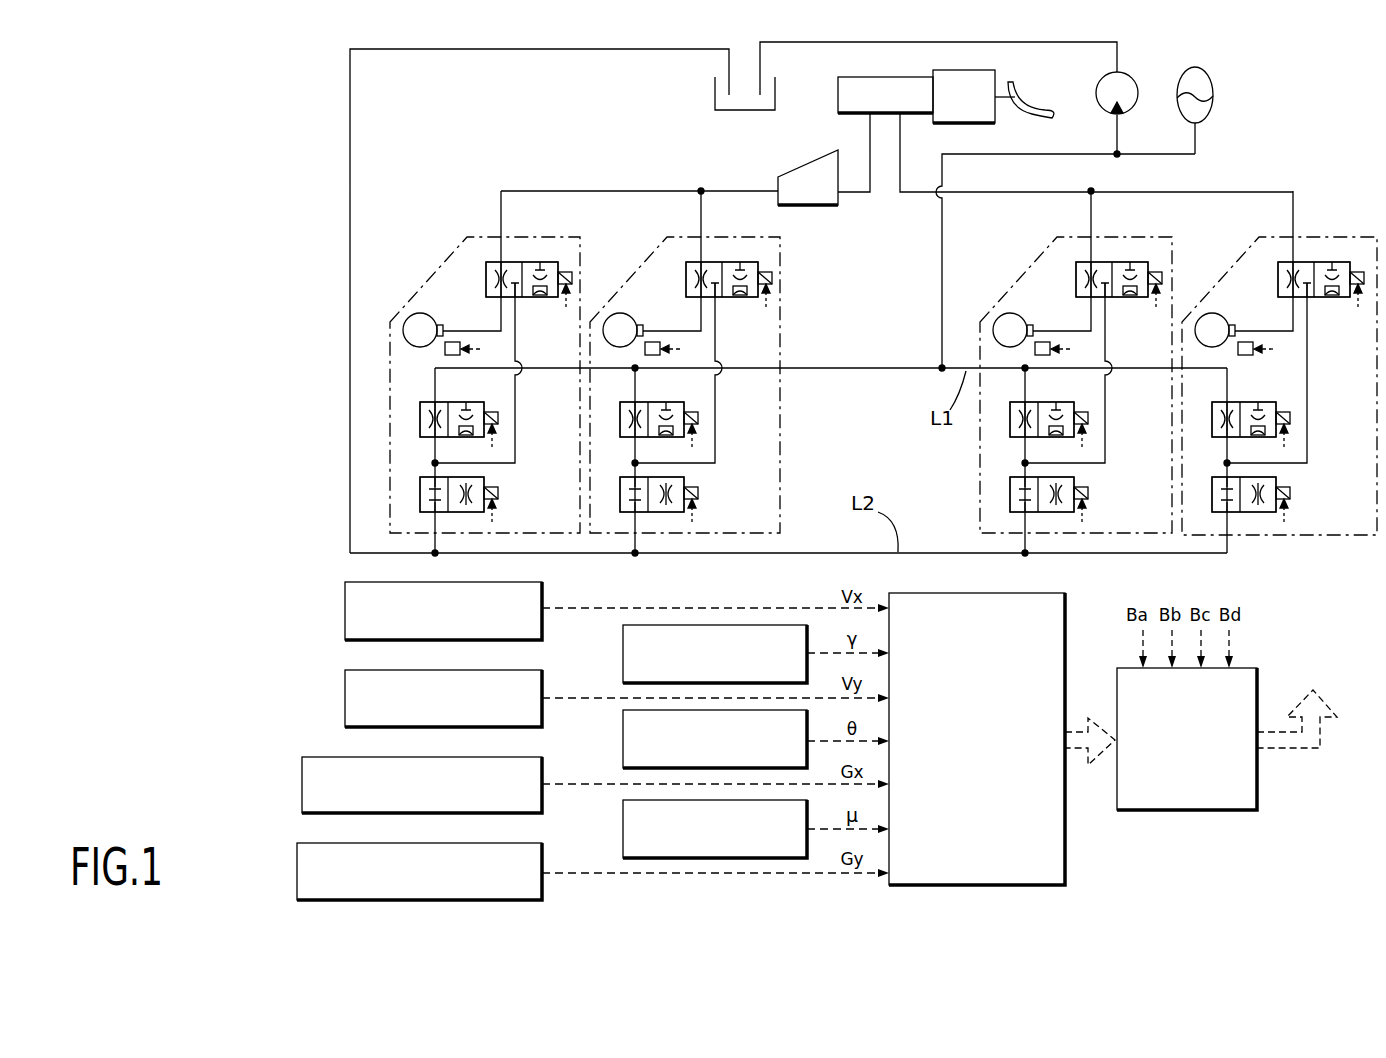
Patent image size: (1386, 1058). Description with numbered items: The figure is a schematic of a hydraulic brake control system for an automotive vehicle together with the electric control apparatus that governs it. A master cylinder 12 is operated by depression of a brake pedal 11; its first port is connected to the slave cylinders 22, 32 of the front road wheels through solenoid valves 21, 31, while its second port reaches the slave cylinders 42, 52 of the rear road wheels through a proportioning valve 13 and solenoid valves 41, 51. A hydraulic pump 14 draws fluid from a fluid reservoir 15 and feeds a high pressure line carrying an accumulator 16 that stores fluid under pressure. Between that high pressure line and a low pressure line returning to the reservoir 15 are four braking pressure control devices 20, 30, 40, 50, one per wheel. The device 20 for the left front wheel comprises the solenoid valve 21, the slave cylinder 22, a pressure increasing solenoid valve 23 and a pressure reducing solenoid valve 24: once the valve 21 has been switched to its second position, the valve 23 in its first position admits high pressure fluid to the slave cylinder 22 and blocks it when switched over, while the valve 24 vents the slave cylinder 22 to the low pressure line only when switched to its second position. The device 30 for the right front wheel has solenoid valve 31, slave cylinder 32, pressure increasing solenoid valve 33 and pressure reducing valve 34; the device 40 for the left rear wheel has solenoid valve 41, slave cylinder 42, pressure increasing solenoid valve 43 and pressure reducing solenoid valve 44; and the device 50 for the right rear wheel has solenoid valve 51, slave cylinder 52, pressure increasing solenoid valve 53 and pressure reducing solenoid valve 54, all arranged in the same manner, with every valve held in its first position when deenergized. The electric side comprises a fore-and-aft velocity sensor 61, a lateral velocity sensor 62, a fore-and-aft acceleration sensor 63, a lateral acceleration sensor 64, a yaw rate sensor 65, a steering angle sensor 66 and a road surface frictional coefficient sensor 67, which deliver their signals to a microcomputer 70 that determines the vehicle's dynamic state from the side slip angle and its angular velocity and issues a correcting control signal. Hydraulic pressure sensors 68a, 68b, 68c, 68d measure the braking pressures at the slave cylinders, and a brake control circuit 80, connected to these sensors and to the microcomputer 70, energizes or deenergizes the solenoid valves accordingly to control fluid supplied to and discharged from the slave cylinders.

The brake pedal 11 is at (1028, 92).
The master cylinder 12 is at (858, 77).
The proportioning valve 13 is at (803, 165).
The hydraulic pump 14 is at (1125, 73).
The fluid reservoir 15 is at (713, 93).
The accumulator 16 is at (1215, 77).
The braking pressure control device 20 is at (1015, 290).
The solenoid valve 21 is at (1101, 260).
The slave cylinder 22 is at (1018, 313).
The pressure increasing solenoid valve 23 is at (1045, 402).
The pressure reducing solenoid valve 24 is at (1075, 483).
The braking pressure control device 30 is at (1215, 290).
The solenoid valve 31 is at (1301, 260).
The slave cylinder 32 is at (1220, 313).
The pressure increasing solenoid valve 33 is at (1245, 402).
The pressure reducing valve 34 is at (1277, 483).
The braking pressure control device 40 is at (425, 290).
The solenoid valve 41 is at (510, 260).
The slave cylinder 42 is at (428, 313).
The pressure increasing solenoid valve 43 is at (455, 402).
The pressure reducing solenoid valve 44 is at (485, 483).
The braking pressure control device 50 is at (623, 290).
The solenoid valve 51 is at (710, 260).
The slave cylinder 52 is at (628, 313).
The pressure increasing solenoid valve 53 is at (655, 402).
The pressure reducing solenoid valve 54 is at (685, 483).
The fore-and-aft velocity sensor 61 is at (345, 612).
The lateral velocity sensor 62 is at (345, 700).
The fore-and-aft acceleration sensor 63 is at (302, 785).
The lateral acceleration sensor 64 is at (297, 868).
The yaw rate sensor 65 is at (623, 653).
The steering angle sensor 66 is at (623, 743).
The road surface frictional coefficient sensor 67 is at (623, 829).
The hydraulic pressure sensor 68a is at (1040, 357).
The hydraulic pressure sensor 68b is at (1242, 356).
The hydraulic pressure sensor 68c is at (445, 356).
The hydraulic pressure sensor 68d is at (646, 356).
The microcomputer 70 is at (1065, 848).
The brake control circuit 80 is at (1225, 810).